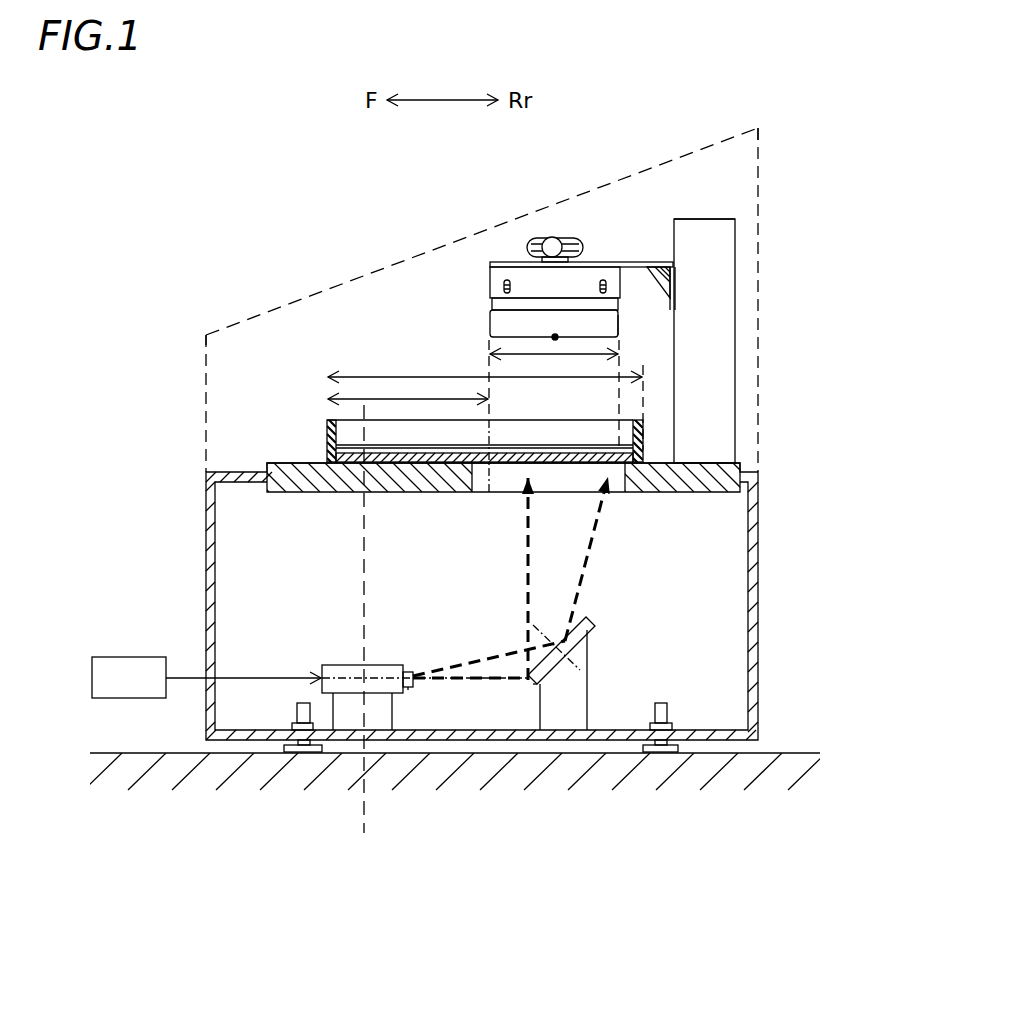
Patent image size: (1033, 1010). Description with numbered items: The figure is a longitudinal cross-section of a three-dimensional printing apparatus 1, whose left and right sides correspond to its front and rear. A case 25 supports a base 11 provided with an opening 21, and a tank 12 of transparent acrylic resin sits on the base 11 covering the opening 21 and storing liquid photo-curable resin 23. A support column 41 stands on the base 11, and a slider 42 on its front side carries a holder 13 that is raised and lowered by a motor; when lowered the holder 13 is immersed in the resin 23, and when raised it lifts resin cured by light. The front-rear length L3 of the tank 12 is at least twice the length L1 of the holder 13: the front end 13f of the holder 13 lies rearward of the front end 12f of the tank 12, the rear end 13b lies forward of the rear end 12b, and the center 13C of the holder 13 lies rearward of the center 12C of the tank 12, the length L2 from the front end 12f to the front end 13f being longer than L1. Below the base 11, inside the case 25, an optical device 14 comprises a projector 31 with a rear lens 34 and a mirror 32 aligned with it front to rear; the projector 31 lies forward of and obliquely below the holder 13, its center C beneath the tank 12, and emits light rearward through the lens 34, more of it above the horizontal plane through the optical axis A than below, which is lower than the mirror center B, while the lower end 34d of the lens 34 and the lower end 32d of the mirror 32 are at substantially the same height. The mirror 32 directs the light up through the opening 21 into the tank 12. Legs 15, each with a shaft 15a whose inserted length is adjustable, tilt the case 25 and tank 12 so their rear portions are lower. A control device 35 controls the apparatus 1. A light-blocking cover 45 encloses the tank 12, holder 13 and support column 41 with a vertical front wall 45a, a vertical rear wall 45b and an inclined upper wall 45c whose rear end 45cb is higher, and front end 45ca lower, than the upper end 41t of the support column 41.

The three-dimensional printing apparatus 1 is at (290, 255).
The base 11 is at (290, 463).
The tank 12 is at (520, 442).
The front end of the tank 12f is at (327, 430).
The rear end of the tank 12b is at (645, 432).
The center of the tank 12C is at (493, 450).
The holder 13 is at (611, 256).
The front end of the holder 13f is at (490, 327).
The rear end of the holder 13b is at (620, 320).
The center of the holder 13C is at (555, 337).
The optical device 14 is at (368, 667).
The leg 15 is at (283, 745).
The shaft 15a is at (297, 712).
The opening 21 is at (480, 492).
The photo-curable resin 23 is at (324, 422).
The case 25 is at (758, 600).
The projector 31 is at (334, 665).
The mirror 32 is at (585, 618).
The lower end of the mirror 32d is at (532, 687).
The lens 34 is at (410, 670).
The lower end of the lens 34d is at (408, 690).
The control device 35 is at (128, 657).
The support column 41 is at (755, 278).
The upper end of the support column 41t is at (699, 219).
The slider 42 is at (610, 262).
The cover 45 is at (484, 271).
The front wall 45a is at (206, 408).
The rear wall 45b is at (760, 230).
The upper wall 45c is at (385, 268).
The front end of the upper wall 45ca is at (205, 333).
The rear end of the upper wall 45cb is at (760, 128).
The optical axis A is at (375, 670).
The center of the mirror B is at (570, 643).
The center of the projector C is at (385, 558).
The length of the holder L1 is at (583, 357).
The length between tank front end and holder front end L2 is at (448, 399).
The length of the tank L3 is at (485, 364).